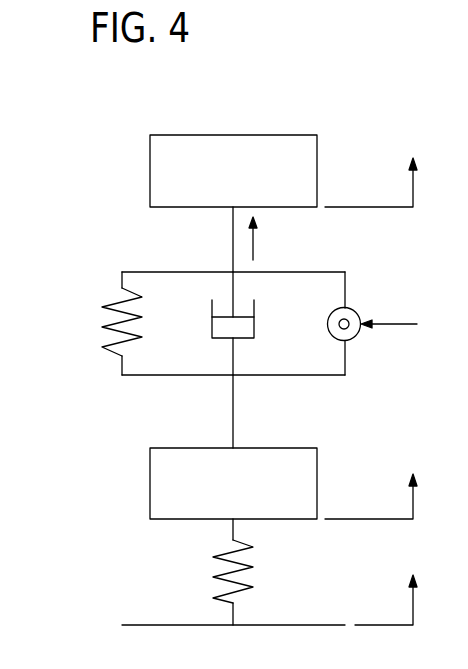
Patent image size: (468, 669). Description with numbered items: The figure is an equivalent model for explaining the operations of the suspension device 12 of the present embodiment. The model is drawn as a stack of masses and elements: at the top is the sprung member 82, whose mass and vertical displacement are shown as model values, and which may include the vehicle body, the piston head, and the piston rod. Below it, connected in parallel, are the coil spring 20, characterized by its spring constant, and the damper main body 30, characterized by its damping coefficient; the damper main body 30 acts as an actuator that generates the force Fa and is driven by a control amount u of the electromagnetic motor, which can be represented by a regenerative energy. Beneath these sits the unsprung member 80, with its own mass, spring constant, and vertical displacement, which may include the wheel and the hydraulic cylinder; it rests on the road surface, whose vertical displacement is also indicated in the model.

The suspension device 12 is at (388, 85).
The sprung member 82 is at (160, 150).
The unsprung member 80 is at (160, 462).
The coil spring 20 is at (105, 318).
The damper main body 30 is at (257, 327).